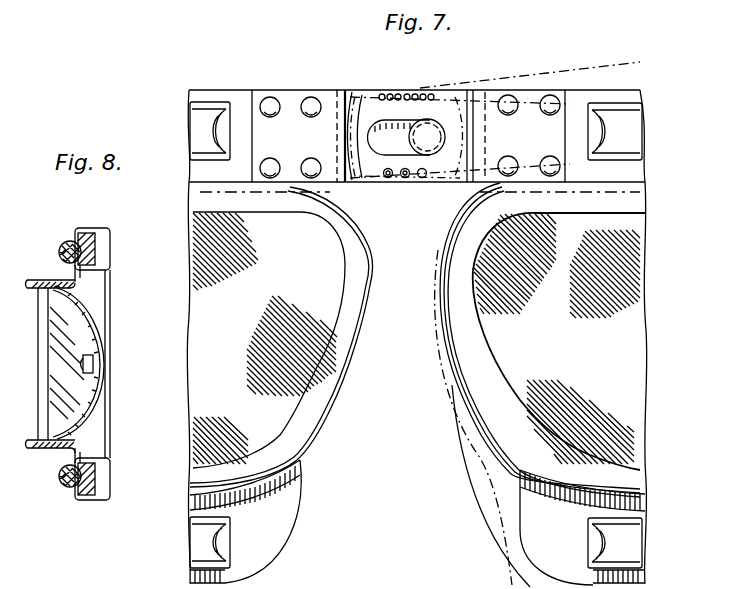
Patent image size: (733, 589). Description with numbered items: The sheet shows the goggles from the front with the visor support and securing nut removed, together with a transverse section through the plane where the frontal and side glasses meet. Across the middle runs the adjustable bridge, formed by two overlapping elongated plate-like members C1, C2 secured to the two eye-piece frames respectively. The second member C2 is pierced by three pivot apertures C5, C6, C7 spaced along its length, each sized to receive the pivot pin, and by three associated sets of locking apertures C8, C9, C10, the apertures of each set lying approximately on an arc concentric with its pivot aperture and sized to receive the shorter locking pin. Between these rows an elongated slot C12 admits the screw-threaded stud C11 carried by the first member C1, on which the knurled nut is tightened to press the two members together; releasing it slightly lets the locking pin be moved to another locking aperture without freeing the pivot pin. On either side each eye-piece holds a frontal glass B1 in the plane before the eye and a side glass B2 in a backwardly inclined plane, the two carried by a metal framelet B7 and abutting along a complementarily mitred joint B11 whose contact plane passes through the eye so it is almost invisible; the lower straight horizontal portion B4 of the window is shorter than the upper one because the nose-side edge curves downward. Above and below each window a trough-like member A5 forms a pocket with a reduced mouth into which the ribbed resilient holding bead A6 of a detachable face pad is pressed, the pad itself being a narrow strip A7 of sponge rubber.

In FIG. 7, the trough-like member A5 is at (203, 122).
In FIG. 8, the trough-like member A5 is at (64, 242).
In FIG. 8, the resilient holding bead A6 is at (59, 254).
In FIG. 8, the strip of resilient material A7 is at (100, 250).
In FIG. 7, the frontal glass B1 is at (335, 275).
In FIG. 8, the side glass B2 is at (58, 318).
In FIG. 7, the lower straight horizontal portion B4 is at (362, 350).
In FIG. 8, the framelet B7 is at (60, 455).
In FIG. 8, the mitred joint B11 is at (48, 370).
In FIG. 7, the plate-like member C1 is at (288, 100).
In FIG. 7, the plate-like member C2 is at (507, 92).
In FIG. 7, the pivot aperture C5 is at (386, 180).
In FIG. 7, the pivot aperture C6 is at (404, 180).
In FIG. 7, the pivot aperture C7 is at (423, 180).
In FIG. 7, the set of locking apertures C8 is at (382, 93).
In FIG. 7, the set of locking apertures C9 is at (407, 93).
In FIG. 7, the set of locking apertures C10 is at (425, 96).
In FIG. 7, the screw-threaded stud C11 is at (429, 130).
In FIG. 7, the elongated slot C12 is at (383, 136).